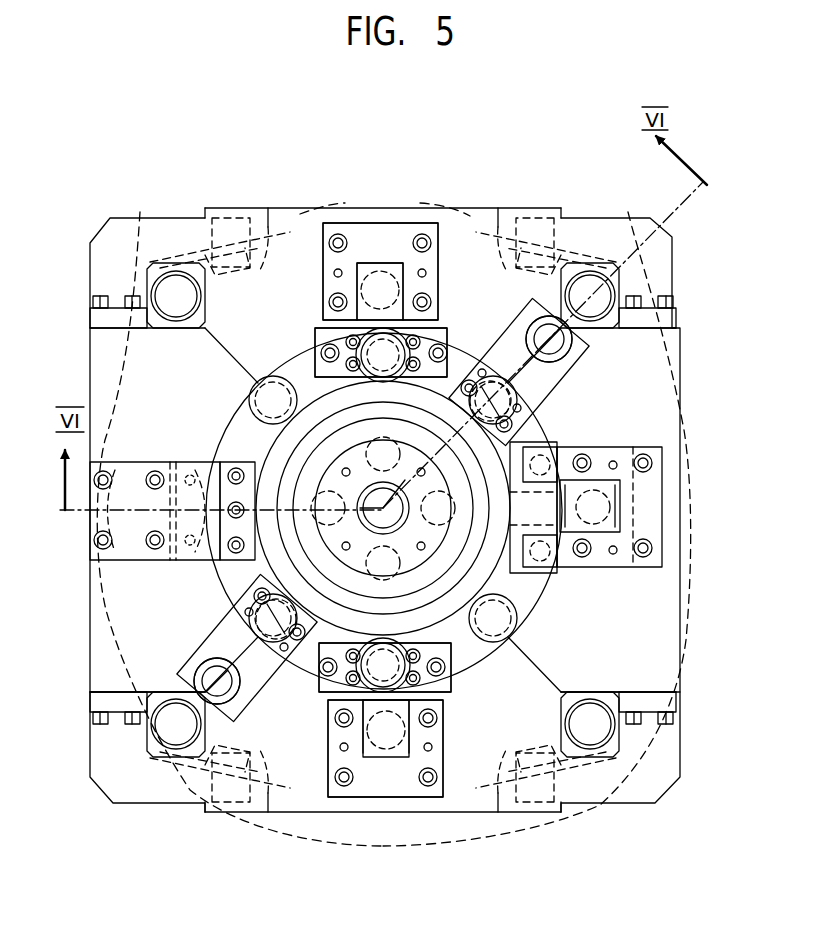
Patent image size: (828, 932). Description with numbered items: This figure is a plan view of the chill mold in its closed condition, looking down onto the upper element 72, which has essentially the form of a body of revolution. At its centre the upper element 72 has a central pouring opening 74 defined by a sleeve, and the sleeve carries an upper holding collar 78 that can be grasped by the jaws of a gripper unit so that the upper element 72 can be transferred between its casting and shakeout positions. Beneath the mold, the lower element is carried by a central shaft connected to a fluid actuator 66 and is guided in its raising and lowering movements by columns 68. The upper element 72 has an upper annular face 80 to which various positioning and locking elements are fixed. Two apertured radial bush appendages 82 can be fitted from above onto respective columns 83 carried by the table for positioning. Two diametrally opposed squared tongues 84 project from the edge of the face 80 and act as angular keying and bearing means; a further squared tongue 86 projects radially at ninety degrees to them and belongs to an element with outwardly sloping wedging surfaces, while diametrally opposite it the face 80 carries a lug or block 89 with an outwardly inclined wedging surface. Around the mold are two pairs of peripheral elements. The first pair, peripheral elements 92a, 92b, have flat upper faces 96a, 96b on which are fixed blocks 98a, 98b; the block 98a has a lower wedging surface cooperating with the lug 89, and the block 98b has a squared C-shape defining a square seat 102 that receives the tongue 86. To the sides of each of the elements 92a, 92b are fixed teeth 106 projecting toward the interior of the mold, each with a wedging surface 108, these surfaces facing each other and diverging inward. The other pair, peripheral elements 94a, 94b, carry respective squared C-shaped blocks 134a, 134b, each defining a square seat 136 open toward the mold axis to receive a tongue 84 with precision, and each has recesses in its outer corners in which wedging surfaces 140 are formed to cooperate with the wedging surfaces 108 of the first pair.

The fluid actuator 66 is at (395, 454).
The columns 68 is at (378, 560).
The upper element 72 is at (224, 428).
The central pouring opening 74 is at (398, 520).
The upper holding collar 78 is at (405, 562).
The upper annular face 80 is at (552, 440).
The apertured radial bush appendages 82 is at (220, 650).
The columns 83 is at (232, 698).
The squared tongues 84 is at (357, 300).
The squared tongue 86 is at (572, 560).
The lug or block 89 is at (238, 462).
The peripheral element 92a is at (83, 642).
The peripheral element 92b is at (685, 610).
The peripheral element 94a is at (478, 822).
The peripheral element 94b is at (385, 206).
The flat upper face 96a is at (108, 612).
The flat upper face 96b is at (652, 668).
The block 98a is at (105, 528).
The block 98b is at (650, 488).
The square seat 102 is at (600, 478).
The teeth 106 is at (140, 230).
The wedging surface 108 is at (262, 240).
The block 134a is at (400, 778).
The block 134b is at (412, 232).
The square seat 136 is at (362, 272).
The wedging surfaces 140 is at (238, 232).